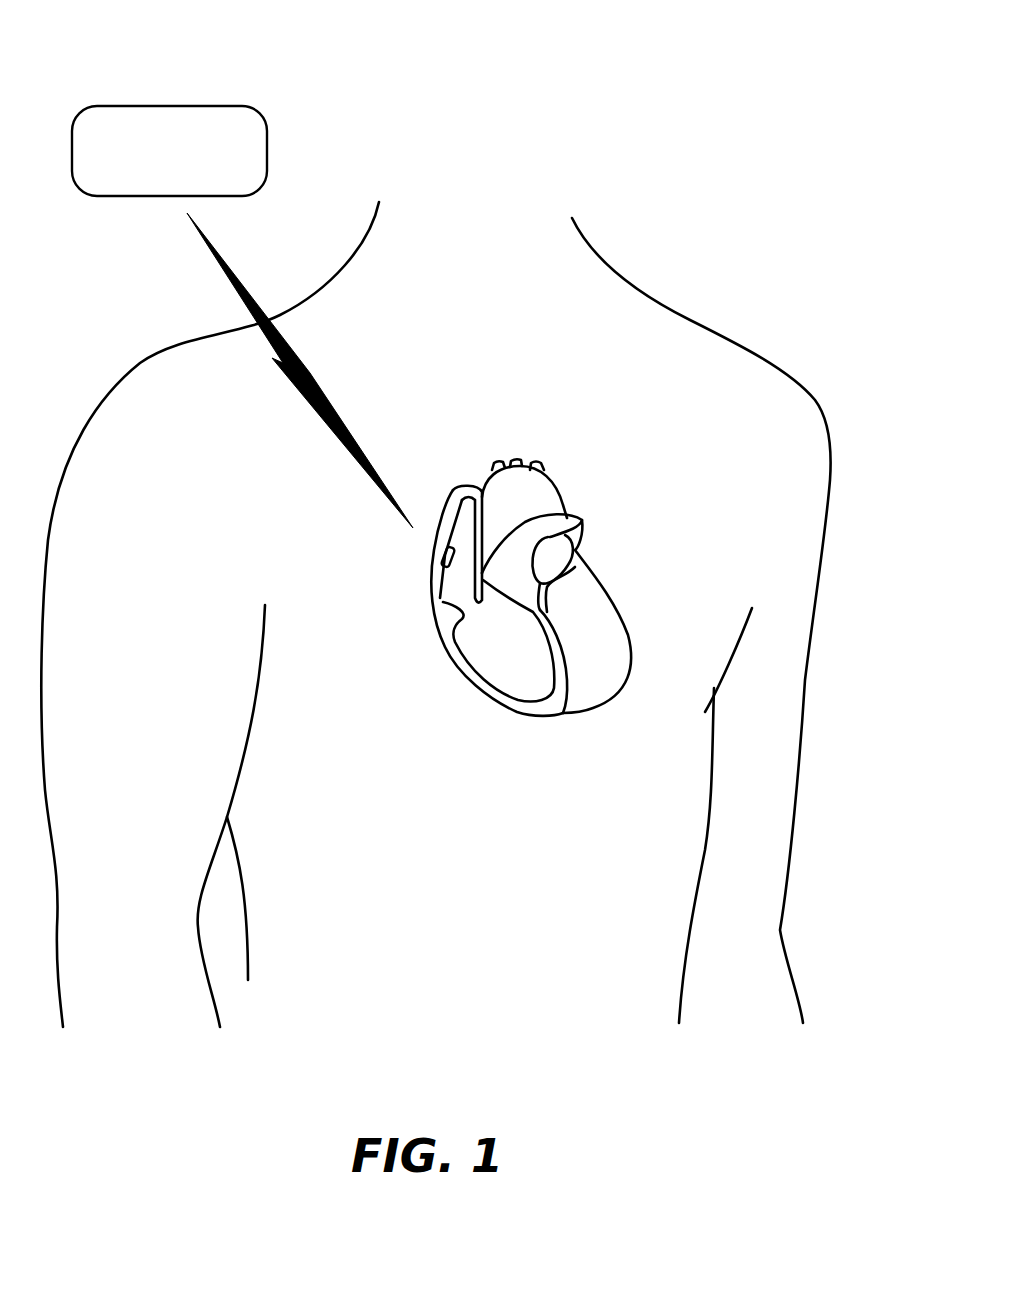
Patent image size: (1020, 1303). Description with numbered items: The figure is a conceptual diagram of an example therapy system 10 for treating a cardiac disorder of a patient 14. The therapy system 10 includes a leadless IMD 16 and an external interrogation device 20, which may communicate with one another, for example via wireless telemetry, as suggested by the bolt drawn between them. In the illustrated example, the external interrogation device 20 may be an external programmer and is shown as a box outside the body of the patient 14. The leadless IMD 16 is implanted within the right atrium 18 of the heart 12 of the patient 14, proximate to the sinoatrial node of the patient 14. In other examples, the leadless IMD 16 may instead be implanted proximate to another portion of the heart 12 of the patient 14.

The therapy system 10 is at (592, 100).
The heart 12 is at (607, 734).
The patient 14 is at (690, 323).
The leadless IMD 16 is at (445, 558).
The right atrium 18 is at (457, 586).
The external interrogation device 20 is at (184, 164).